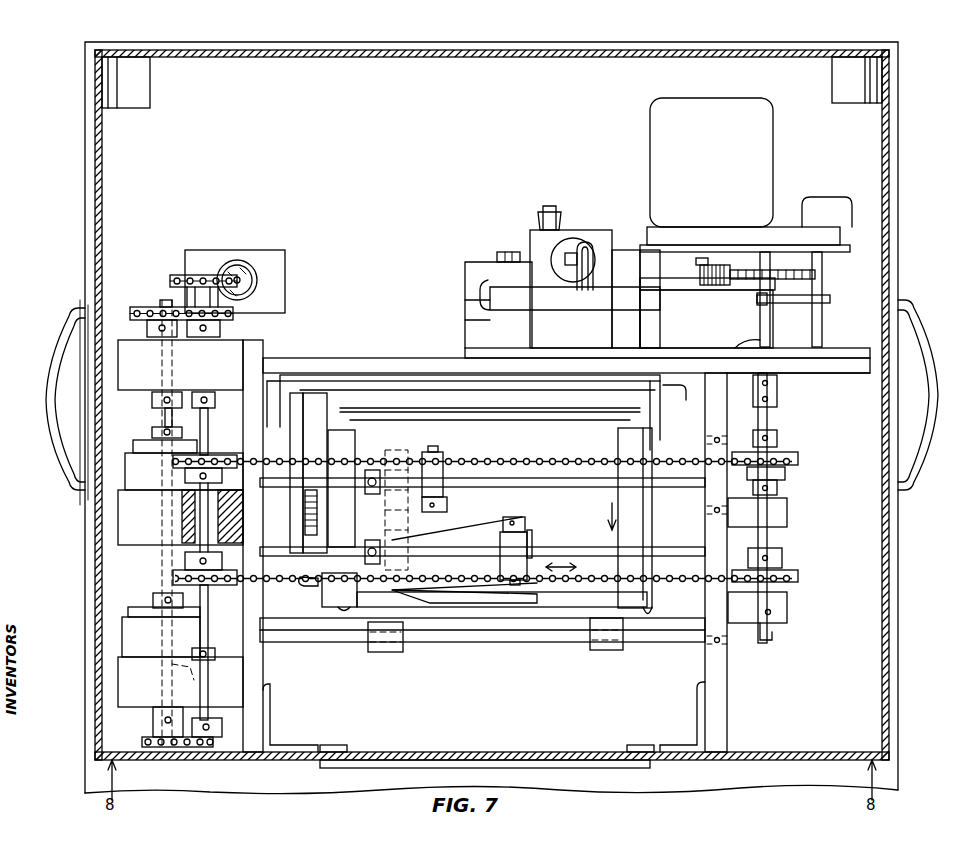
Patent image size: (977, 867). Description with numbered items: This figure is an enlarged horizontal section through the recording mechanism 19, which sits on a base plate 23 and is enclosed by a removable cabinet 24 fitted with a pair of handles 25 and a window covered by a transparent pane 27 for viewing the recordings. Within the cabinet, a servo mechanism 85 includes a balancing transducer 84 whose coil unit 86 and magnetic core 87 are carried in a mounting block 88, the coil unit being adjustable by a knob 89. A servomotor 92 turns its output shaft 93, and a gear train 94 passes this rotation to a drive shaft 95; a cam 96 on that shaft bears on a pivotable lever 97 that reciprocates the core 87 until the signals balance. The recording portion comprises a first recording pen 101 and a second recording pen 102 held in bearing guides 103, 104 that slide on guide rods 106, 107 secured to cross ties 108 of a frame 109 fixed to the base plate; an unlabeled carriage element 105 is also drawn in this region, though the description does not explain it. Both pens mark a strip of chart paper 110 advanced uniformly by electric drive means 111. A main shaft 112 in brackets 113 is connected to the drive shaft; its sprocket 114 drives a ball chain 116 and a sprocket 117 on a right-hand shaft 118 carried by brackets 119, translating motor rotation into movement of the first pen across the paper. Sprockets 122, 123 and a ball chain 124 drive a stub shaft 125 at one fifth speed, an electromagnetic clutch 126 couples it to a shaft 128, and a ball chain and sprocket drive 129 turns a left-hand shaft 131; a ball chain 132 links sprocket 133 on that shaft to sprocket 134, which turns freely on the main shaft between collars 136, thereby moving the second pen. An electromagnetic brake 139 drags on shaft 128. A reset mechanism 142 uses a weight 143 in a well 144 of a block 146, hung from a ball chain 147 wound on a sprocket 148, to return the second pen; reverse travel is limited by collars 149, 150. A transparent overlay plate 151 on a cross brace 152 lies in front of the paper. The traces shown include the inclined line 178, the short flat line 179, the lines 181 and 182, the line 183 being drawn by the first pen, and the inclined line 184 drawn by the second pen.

The recording mechanism 19 is at (420, 260).
The base plate 23 is at (110, 770).
The cabinet 24 is at (882, 152).
The handles 25 is at (46, 405).
The transparent pane 27 is at (392, 768).
The balancing transducer 84 is at (596, 220).
The servo mechanism 85 is at (640, 210).
The coil unit 86 is at (562, 252).
The magnetic core 87 is at (570, 265).
The mounting block 88 is at (608, 256).
The knob 89 is at (542, 206).
The servomotor 92 is at (718, 100).
The output shaft 93 is at (698, 266).
The gear train 94 is at (750, 270).
The drive shaft 95 is at (770, 326).
The cam 96 is at (824, 292).
The pivotable lever 97 is at (740, 310).
The first recording pen 101 is at (514, 516).
The second recording pen 102 is at (437, 505).
The bearing guide 103 is at (530, 534).
The bearing guide 104 is at (443, 452).
The carriage 105 is at (635, 521).
The guide rod 106 is at (692, 547).
The guide rod 107 is at (698, 487).
The cross ties 108 is at (263, 682).
The frame 109 is at (310, 352).
The chart paper 110 is at (364, 607).
The electric drive means 111 is at (312, 606).
The main shaft 112 is at (768, 416).
The brackets 113 is at (787, 514).
The sprocket 114 is at (786, 568).
The ball chain 116 is at (610, 576).
The sprocket 117 is at (218, 586).
The right-hand shaft 118 is at (207, 626).
The brackets 119 is at (122, 394).
The sprocket 122 is at (210, 750).
The sprocket 123 is at (154, 740).
The ball chain 124 is at (180, 748).
The stub shaft 125 is at (198, 676).
The electromagnetic clutch 126 is at (144, 606).
The shaft 128 is at (160, 416).
The ball chain and sprocket drive 129 is at (151, 306).
The left-hand shaft 131 is at (208, 422).
The ball chain 132 is at (592, 460).
The sprocket 133 is at (236, 455).
The sprocket 134 is at (798, 463).
The collars 136 is at (777, 440).
The electromagnetic brake 139 is at (133, 452).
The reset mechanism 142 is at (275, 276).
The weight 143 is at (250, 286).
The well 144 is at (238, 268).
The block 146 is at (252, 264).
The ball chain 147 is at (168, 272).
The sprocket 148 is at (178, 274).
The collar 149 is at (372, 470).
The collar 150 is at (378, 528).
The transparent overlay plate 151 is at (450, 642).
The cross brace 152 is at (346, 642).
The second inclined line 178 is at (430, 586).
The short flat line 179 is at (524, 596).
The line 181 is at (412, 600).
The line 182 is at (372, 572).
The line 183 is at (470, 524).
The inclined line 184 is at (416, 512).